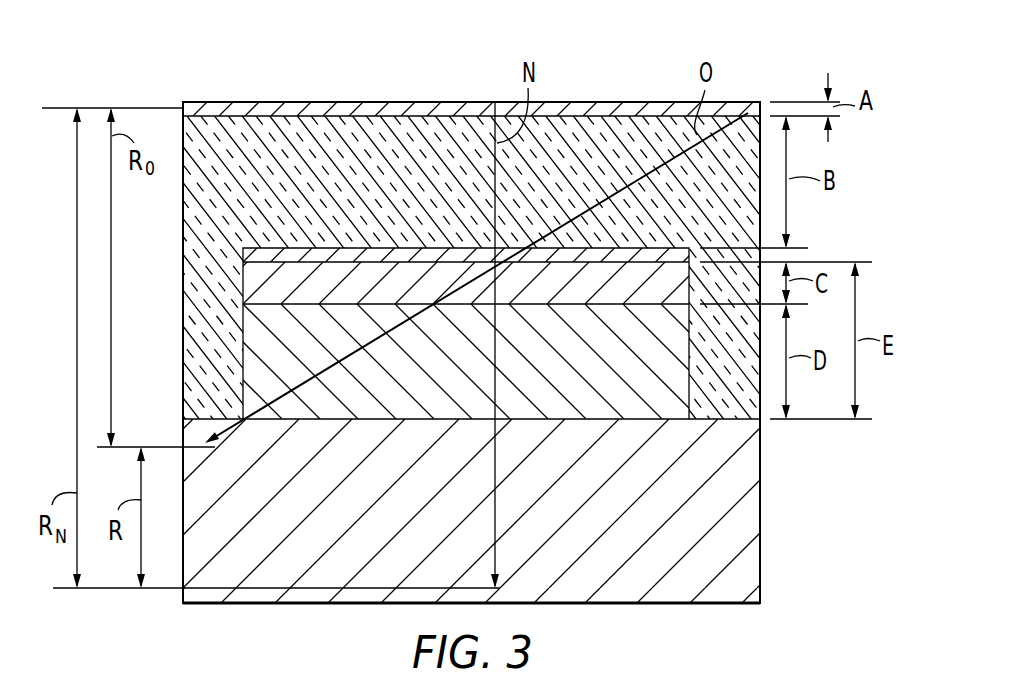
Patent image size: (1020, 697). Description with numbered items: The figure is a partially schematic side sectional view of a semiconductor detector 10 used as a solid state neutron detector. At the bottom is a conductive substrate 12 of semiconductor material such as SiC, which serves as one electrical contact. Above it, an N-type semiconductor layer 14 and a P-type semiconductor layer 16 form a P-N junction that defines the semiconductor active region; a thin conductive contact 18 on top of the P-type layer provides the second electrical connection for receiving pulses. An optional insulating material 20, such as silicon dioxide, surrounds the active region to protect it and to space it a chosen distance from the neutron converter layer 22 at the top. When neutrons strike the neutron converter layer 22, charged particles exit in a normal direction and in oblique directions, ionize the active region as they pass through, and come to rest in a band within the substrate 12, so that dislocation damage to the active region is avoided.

The semiconductor detector 10 is at (416, 302).
The substrate 12 is at (185, 515).
The N-type semiconductor layer 14 is at (257, 360).
The P-type semiconductor layer 16 is at (257, 285).
The conductive contact 18 is at (247, 255).
The insulating material 20 is at (183, 196).
The neutron converter layer 22 is at (268, 100).